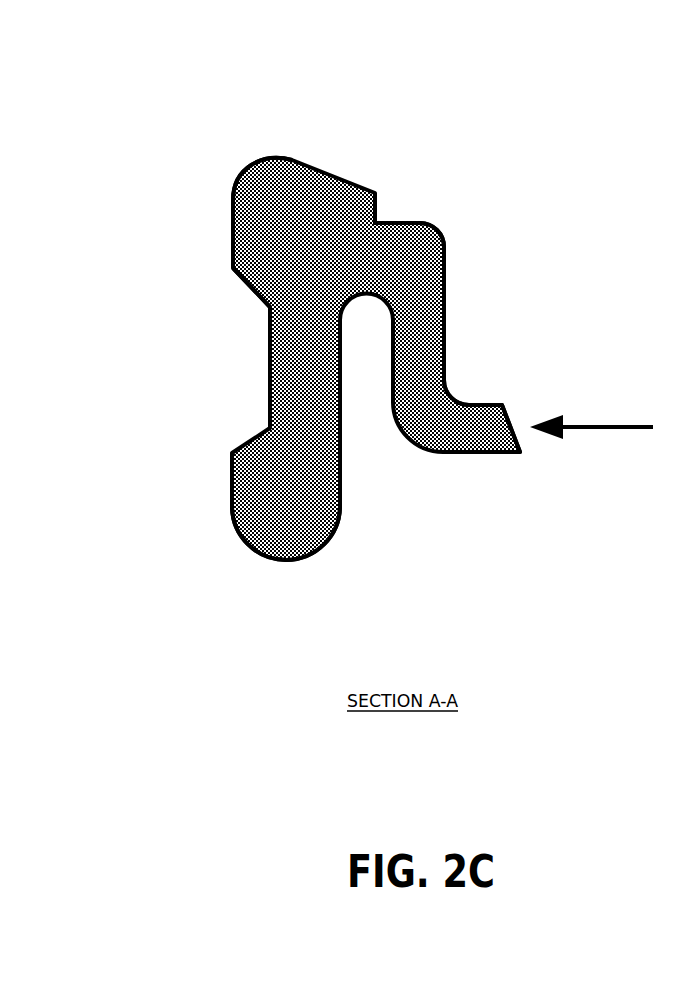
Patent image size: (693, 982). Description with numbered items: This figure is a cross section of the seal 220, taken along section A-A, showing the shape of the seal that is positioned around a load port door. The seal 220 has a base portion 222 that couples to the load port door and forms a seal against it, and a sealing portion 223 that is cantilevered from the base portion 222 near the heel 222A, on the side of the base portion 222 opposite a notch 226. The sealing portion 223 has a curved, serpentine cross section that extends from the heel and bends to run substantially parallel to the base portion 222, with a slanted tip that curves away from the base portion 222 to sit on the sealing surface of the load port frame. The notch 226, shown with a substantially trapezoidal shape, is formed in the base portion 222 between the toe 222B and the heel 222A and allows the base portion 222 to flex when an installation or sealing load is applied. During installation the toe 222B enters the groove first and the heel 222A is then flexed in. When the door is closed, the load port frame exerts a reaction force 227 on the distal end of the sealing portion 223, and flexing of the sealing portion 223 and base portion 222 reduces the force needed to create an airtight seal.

The seal 220 is at (352, 304).
The base portion 222 is at (310, 372).
The heel 222A is at (233, 192).
The toe 222B is at (250, 553).
The sealing portion 223 is at (489, 277).
The notch 226 is at (212, 376).
The reaction force 227 is at (605, 423).